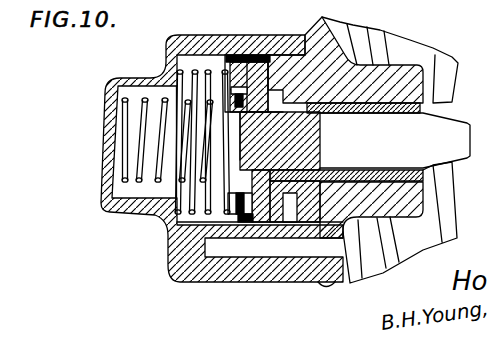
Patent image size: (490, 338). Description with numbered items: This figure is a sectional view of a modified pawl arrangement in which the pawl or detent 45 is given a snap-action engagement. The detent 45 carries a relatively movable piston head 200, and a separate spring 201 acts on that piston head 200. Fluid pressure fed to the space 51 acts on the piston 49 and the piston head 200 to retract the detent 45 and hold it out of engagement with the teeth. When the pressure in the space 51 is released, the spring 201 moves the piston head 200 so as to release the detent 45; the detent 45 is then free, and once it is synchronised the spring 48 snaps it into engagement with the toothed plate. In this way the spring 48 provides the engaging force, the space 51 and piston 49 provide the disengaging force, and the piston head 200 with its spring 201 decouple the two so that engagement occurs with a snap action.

The pawl or detent 45 is at (394, 137).
The spring 48 is at (143, 100).
The piston 49 is at (237, 57).
The space 51 is at (268, 58).
The piston head 200 is at (250, 225).
The spring 201 is at (200, 225).